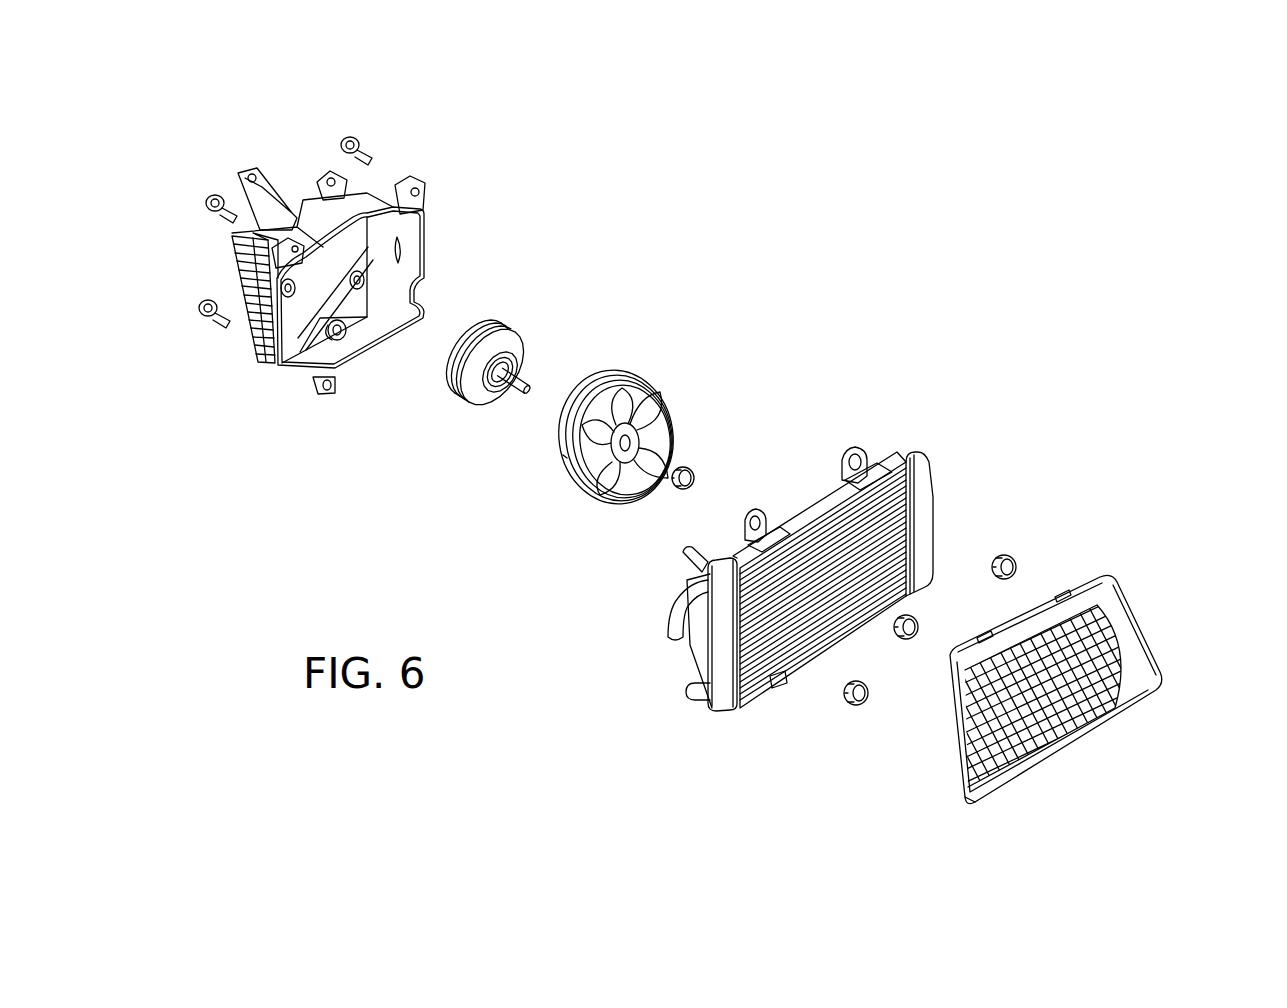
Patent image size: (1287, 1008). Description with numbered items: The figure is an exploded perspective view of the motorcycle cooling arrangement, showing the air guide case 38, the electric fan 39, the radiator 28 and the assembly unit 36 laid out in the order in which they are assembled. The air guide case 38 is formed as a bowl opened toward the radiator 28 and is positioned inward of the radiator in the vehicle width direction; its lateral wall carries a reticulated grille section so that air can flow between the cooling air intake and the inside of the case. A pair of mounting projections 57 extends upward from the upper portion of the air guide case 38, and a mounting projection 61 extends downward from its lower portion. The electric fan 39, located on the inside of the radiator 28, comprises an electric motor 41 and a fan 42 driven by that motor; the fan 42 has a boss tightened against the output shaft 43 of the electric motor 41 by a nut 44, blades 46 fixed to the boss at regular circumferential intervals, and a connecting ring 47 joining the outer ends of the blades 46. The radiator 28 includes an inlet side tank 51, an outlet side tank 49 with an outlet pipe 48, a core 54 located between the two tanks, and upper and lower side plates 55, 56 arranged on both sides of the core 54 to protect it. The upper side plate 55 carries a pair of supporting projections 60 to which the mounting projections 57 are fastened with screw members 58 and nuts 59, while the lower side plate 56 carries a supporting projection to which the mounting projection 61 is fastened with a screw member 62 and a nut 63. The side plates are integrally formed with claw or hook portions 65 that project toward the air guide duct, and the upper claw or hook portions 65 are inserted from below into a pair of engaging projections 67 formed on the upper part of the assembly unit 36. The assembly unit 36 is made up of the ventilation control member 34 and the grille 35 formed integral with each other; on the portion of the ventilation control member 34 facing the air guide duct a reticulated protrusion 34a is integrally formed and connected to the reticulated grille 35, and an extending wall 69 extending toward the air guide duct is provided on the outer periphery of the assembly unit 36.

The radiator 28 is at (930, 468).
The ventilation control member 34 is at (1140, 645).
The reticulated protrusion 34a is at (1130, 690).
The grille 35 is at (1117, 710).
The assembly unit 36 is at (1137, 593).
The air guide case 38 is at (417, 254).
The electric fan 39 is at (653, 215).
The electric motor 41 is at (508, 345).
The fan 42 is at (648, 372).
The output shaft 43 is at (512, 390).
The nut 44 is at (694, 478).
The blades 46 is at (620, 488).
The connecting ring 47 is at (563, 455).
The outlet pipe 48 is at (676, 625).
The outlet side tank 49 is at (695, 660).
The inlet side tank 51 is at (928, 526).
The core 54 is at (750, 637).
The upper side plate 55 is at (801, 512).
The lower side plate 56 is at (778, 684).
The mounting projections 57 is at (300, 228).
The screw members 58 is at (352, 133).
The nuts 59 is at (918, 630).
The supporting projections 60 is at (853, 450).
The mounting projection 61 is at (330, 385).
The screw member 62 is at (203, 306).
The nut 63 is at (856, 705).
The claw or hook portions 65 is at (860, 476).
The engaging projections 67 is at (1066, 590).
The extending wall 69 is at (975, 800).